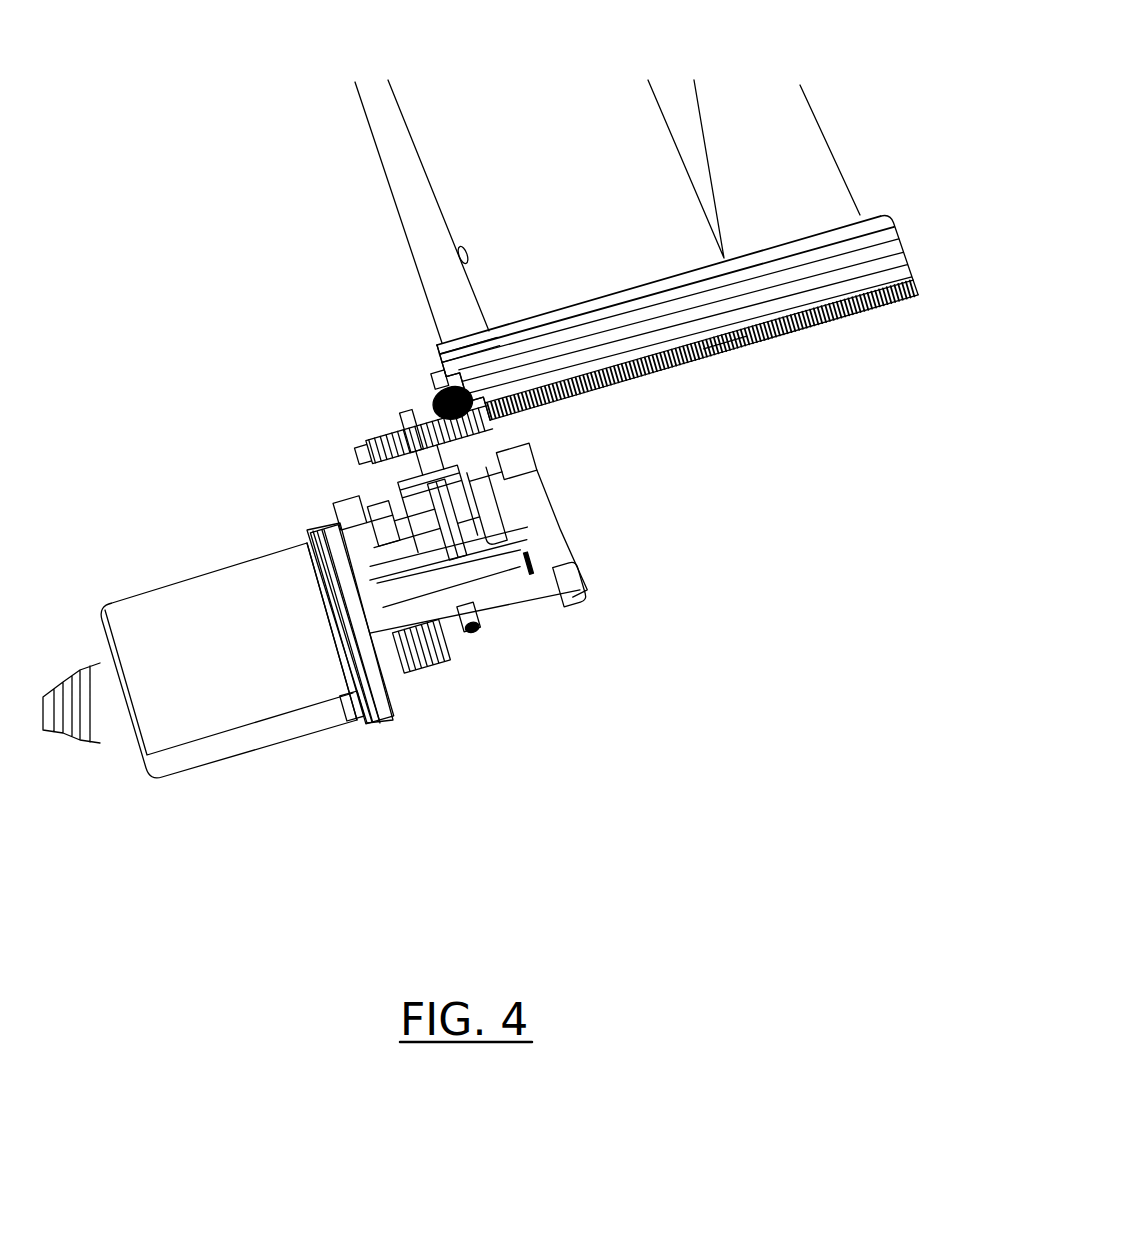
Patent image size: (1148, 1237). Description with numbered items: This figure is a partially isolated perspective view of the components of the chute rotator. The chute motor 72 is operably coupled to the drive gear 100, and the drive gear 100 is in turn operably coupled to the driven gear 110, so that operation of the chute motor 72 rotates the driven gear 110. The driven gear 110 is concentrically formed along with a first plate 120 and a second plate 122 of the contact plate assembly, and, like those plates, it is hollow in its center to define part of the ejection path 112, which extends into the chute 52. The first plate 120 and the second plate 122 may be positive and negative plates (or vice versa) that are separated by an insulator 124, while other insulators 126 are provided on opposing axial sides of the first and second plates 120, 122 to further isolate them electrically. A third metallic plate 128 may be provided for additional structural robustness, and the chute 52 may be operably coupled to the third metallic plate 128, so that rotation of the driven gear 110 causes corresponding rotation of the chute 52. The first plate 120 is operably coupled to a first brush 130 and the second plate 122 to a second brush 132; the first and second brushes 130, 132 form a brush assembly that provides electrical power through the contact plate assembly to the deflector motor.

The chute 52 is at (624, 186).
The chute motor 72 is at (218, 699).
The drive gear 100 is at (362, 445).
The driven gear 110 is at (701, 359).
The ejection path 112 is at (762, 409).
The first plate 120 is at (699, 320).
The second plate 122 is at (703, 281).
The insulator 124 is at (691, 316).
The insulators 126 is at (425, 353).
The third metallic plate 128 is at (685, 261).
The first brush 130 is at (355, 386).
The second brush 132 is at (357, 353).